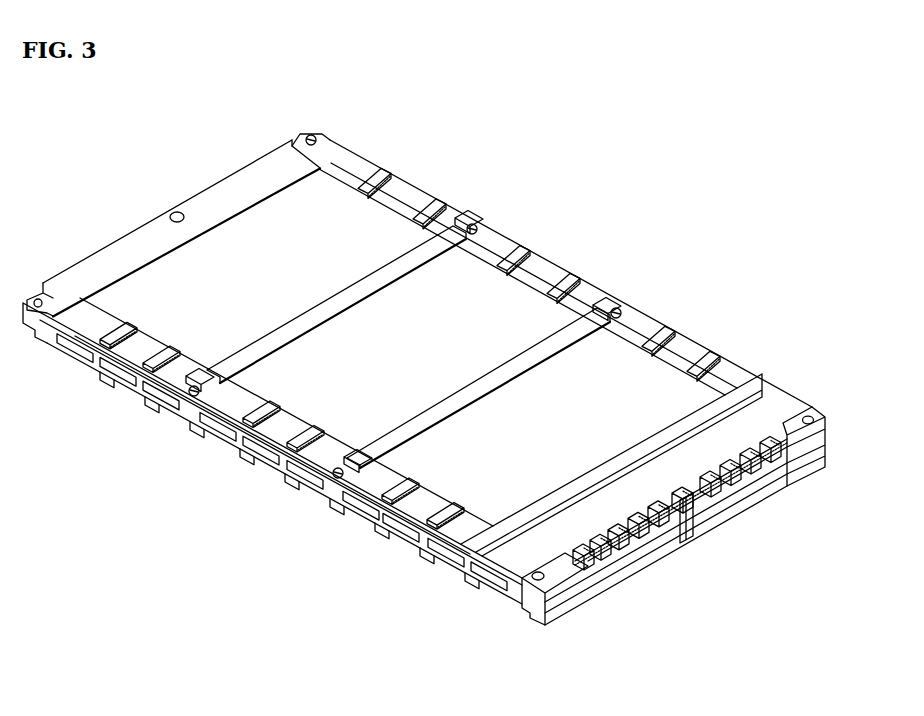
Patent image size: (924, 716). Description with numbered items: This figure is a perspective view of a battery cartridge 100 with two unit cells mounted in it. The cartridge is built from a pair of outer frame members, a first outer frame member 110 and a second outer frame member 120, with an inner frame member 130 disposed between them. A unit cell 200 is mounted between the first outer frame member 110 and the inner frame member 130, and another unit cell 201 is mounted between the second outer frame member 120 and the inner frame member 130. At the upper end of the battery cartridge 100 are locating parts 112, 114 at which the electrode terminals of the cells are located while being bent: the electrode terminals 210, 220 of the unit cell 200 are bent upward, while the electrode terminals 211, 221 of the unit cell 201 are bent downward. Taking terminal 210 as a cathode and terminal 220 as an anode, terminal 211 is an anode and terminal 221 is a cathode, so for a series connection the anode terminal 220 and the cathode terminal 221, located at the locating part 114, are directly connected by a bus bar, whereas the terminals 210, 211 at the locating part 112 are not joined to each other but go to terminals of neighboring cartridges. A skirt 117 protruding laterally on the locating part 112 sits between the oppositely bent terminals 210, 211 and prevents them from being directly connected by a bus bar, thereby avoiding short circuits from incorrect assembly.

The battery cartridge 100 is at (60, 112).
The first outer frame member 110 is at (183, 421).
The locating part 112 is at (590, 540).
The locating part 114 is at (702, 470).
The skirt 117 is at (673, 556).
The second outer frame member 120 is at (260, 463).
The inner frame member 130 is at (327, 498).
The unit cell 200 is at (372, 237).
The unit cell 201 is at (413, 541).
The electrode terminal 210 is at (590, 584).
The electrode terminal 211 is at (637, 571).
The electrode terminal 220 is at (790, 483).
The electrode terminal 221 is at (753, 510).